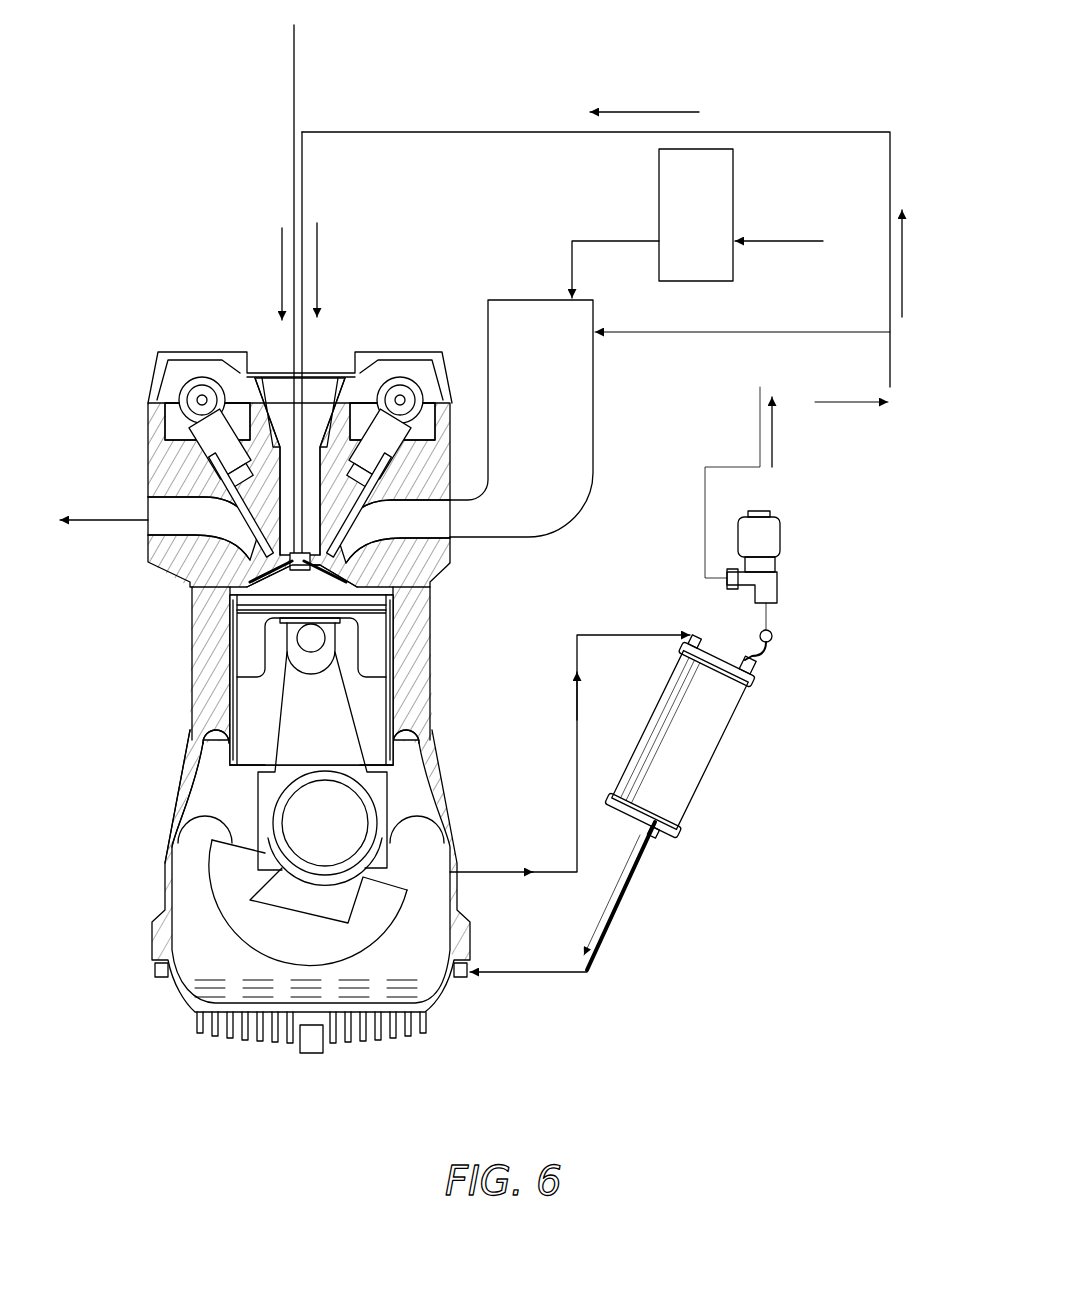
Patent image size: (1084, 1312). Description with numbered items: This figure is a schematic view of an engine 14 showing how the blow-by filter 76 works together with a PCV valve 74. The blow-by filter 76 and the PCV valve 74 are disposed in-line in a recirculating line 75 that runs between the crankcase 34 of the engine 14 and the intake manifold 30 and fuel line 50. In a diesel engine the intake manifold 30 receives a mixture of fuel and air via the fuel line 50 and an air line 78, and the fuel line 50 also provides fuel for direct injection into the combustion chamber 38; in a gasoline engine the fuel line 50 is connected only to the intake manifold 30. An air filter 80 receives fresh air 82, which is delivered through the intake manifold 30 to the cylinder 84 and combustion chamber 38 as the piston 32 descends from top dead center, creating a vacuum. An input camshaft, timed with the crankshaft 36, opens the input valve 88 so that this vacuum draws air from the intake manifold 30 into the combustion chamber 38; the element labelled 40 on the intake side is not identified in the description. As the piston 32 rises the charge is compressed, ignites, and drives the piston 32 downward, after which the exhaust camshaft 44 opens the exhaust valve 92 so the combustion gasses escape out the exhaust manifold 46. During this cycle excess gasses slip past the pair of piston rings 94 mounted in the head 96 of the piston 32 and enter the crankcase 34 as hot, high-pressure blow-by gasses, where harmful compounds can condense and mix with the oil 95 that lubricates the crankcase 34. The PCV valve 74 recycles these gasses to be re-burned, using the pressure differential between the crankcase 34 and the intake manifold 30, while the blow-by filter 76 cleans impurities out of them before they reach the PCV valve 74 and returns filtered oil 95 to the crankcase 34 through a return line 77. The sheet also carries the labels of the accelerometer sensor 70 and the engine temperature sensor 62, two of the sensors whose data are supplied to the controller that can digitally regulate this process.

The engine 14 is at (187, 217).
The accelerometer sensor 70 is at (294, 82).
The fuel line 50 is at (892, 165).
The fresh air 82 is at (785, 233).
The air filter 80 is at (698, 268).
The air line 78 is at (572, 256).
The intake manifold 30 is at (538, 311).
The engine temperature sensor 62 is at (672, 334).
The exhaust camshaft 44 is at (182, 387).
The intake rocker arm 40 is at (418, 387).
The exhaust valve 92 is at (187, 433).
The input valve 88 is at (380, 463).
The exhaust manifold 46 is at (87, 520).
The PCV valve 74 is at (780, 517).
The piston 32 is at (247, 637).
The combustion chamber 38 is at (385, 573).
The cylinder 84 is at (232, 665).
The piston rings 94 is at (322, 600).
The head of the piston 96 is at (347, 612).
The crankcase 34 is at (197, 747).
The crankshaft 36 is at (345, 820).
The recirculating line 75 is at (577, 760).
The blow-by filter 76 is at (695, 736).
The return line 77 is at (625, 884).
The oil 95 is at (410, 993).